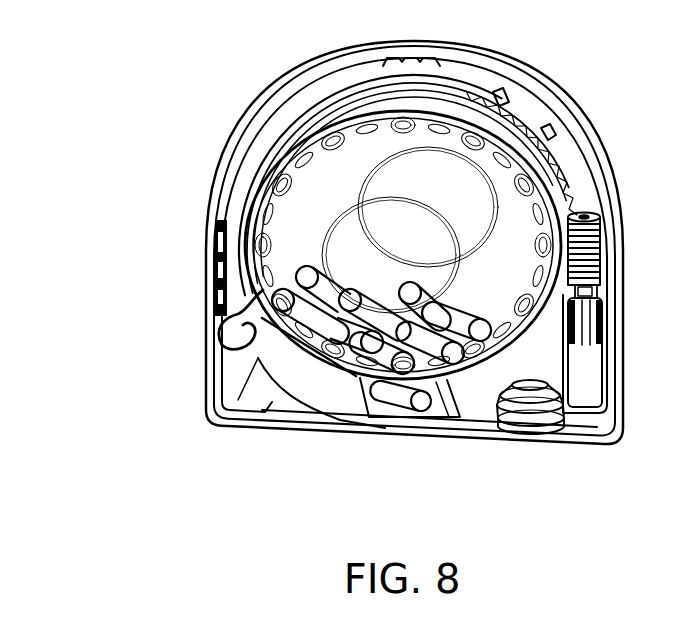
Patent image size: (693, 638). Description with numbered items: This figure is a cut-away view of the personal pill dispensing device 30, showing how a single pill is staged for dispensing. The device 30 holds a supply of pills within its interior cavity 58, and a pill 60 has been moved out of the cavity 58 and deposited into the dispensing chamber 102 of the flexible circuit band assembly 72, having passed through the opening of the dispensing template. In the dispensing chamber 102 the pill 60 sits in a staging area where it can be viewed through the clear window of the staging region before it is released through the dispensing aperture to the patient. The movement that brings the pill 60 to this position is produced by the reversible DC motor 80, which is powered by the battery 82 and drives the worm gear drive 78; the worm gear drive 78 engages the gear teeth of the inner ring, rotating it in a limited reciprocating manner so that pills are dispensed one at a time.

The pill dispensing device 30 is at (185, 91).
The cavity 58 is at (350, 245).
The pill 60 is at (420, 410).
The flexible circuit band assembly 72 is at (250, 362).
The worm gear drive 78 is at (600, 224).
The reversible DC motor 80 is at (592, 367).
The battery 82 is at (553, 428).
The dispensing chamber 102 is at (383, 417).